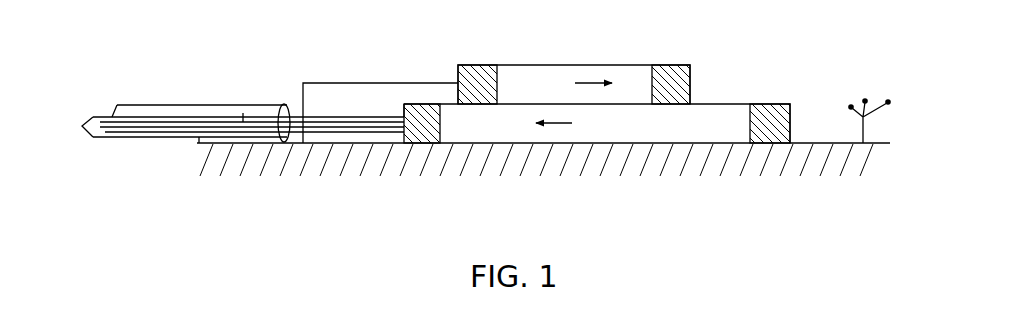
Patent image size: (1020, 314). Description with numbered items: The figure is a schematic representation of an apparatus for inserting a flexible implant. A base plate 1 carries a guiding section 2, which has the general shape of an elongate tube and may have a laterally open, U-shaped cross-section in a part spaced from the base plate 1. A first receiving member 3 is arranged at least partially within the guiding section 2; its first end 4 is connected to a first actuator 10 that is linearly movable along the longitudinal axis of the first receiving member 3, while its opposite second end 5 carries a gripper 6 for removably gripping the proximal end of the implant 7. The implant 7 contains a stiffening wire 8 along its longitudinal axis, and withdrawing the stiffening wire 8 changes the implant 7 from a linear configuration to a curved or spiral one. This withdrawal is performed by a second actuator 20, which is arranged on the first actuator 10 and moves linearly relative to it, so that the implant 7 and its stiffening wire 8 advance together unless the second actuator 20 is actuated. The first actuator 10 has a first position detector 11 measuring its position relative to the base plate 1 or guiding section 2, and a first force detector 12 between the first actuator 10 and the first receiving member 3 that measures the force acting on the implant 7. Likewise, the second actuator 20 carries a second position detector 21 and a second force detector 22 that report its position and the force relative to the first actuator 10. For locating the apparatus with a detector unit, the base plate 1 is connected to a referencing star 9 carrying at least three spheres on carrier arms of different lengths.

The base plate 1 is at (504, 164).
The guiding section 2 is at (217, 103).
The first receiving member 3 is at (348, 128).
The first end 4 is at (399, 110).
The second end 5 is at (263, 109).
The gripper 6 is at (248, 111).
The implant 7 is at (107, 139).
The stiffening wire 8 is at (334, 81).
The referencing star 9 is at (853, 90).
The first actuator 10 is at (651, 126).
The first position detector 11 is at (766, 134).
The first force detector 12 is at (419, 135).
The second actuator 20 is at (589, 64).
The second position detector 21 is at (671, 75).
The second force detector 22 is at (481, 77).